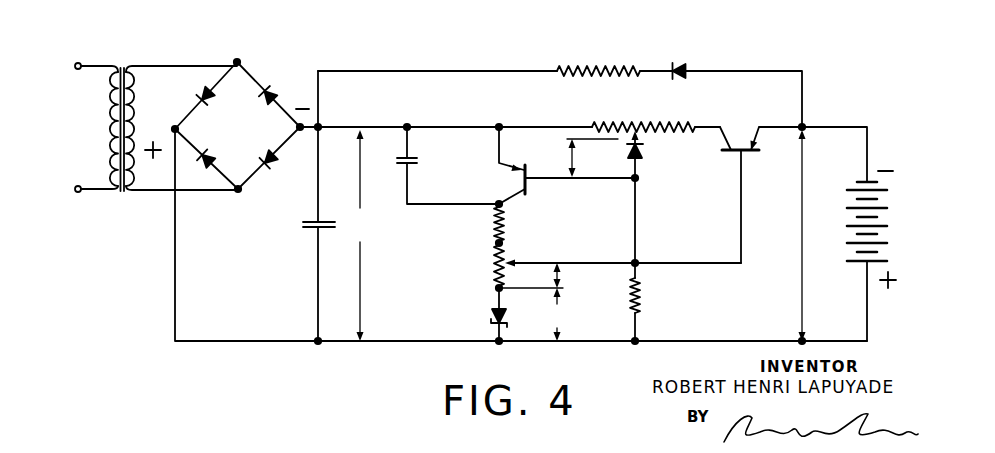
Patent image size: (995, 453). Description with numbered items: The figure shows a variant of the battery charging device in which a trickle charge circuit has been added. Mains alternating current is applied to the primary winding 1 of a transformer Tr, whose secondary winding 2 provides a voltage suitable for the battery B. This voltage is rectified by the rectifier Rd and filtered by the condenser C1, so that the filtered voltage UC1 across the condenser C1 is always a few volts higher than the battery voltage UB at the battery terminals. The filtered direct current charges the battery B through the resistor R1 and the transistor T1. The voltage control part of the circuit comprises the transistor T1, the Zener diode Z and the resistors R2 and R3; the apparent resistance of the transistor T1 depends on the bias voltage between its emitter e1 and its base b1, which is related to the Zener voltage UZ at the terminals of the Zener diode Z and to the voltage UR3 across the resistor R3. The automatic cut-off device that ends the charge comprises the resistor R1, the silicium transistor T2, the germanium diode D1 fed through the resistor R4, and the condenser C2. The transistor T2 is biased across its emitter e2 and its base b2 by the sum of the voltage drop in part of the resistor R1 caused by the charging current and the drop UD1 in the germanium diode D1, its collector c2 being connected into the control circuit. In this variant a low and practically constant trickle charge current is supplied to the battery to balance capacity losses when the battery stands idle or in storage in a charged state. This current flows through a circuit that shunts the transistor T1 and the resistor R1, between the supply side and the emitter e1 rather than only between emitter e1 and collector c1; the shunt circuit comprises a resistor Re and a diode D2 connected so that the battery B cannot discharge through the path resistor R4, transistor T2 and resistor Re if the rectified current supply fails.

The primary winding 1 is at (113, 121).
The secondary winding 2 is at (131, 128).
The transformer Tr is at (116, 149).
The rectifier Rd is at (249, 128).
The condenser C1 is at (316, 222).
The voltage across condenser C1 UC1 is at (363, 235).
The condenser C2 is at (407, 158).
The silicium transistor T2 is at (546, 178).
The emitter of transistor T2 e2 is at (497, 166).
The collector of transistor T2 c2 is at (511, 197).
The base of transistor T2 b2 is at (536, 181).
The resistor R2 is at (494, 228).
The resistor R3 is at (494, 265).
The voltage across resistor R3 UR3 is at (561, 278).
The Zener diode Z is at (491, 317).
The Zener voltage UZ is at (558, 314).
The resistor Re is at (605, 64).
The diode D2 is at (684, 66).
The resistor R1 is at (646, 120).
The germanium diode D1 is at (644, 160).
The voltage drop in germanium diode D1 UD1 is at (578, 158).
The resistor R4 is at (641, 295).
The transistor T1 is at (746, 179).
The collector of transistor T1 c1 is at (723, 138).
The base of transistor T1 b1 is at (742, 162).
The emitter of transistor T1 e1 is at (758, 136).
The battery voltage UB is at (803, 235).
The battery B is at (887, 226).